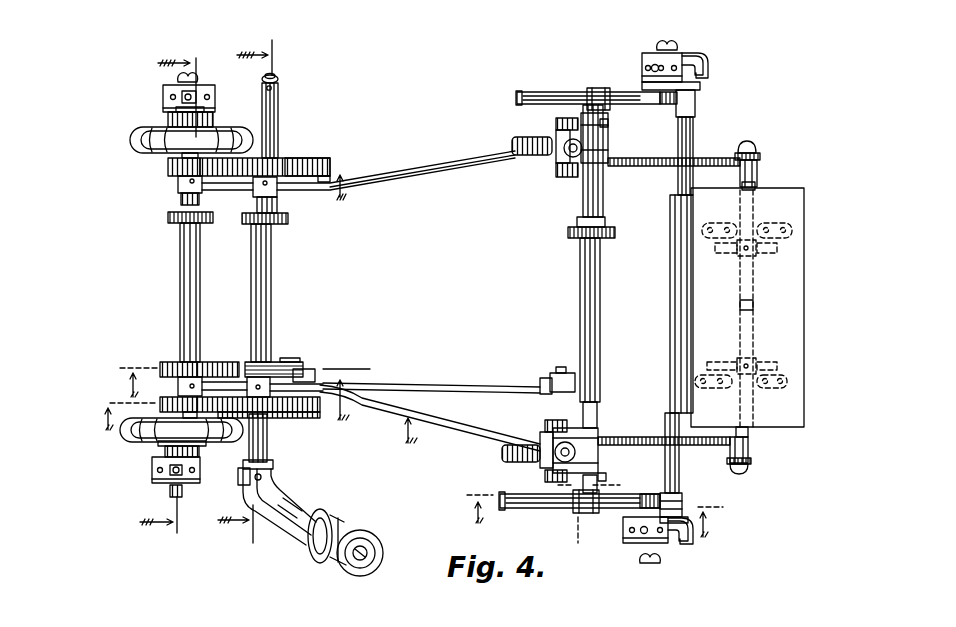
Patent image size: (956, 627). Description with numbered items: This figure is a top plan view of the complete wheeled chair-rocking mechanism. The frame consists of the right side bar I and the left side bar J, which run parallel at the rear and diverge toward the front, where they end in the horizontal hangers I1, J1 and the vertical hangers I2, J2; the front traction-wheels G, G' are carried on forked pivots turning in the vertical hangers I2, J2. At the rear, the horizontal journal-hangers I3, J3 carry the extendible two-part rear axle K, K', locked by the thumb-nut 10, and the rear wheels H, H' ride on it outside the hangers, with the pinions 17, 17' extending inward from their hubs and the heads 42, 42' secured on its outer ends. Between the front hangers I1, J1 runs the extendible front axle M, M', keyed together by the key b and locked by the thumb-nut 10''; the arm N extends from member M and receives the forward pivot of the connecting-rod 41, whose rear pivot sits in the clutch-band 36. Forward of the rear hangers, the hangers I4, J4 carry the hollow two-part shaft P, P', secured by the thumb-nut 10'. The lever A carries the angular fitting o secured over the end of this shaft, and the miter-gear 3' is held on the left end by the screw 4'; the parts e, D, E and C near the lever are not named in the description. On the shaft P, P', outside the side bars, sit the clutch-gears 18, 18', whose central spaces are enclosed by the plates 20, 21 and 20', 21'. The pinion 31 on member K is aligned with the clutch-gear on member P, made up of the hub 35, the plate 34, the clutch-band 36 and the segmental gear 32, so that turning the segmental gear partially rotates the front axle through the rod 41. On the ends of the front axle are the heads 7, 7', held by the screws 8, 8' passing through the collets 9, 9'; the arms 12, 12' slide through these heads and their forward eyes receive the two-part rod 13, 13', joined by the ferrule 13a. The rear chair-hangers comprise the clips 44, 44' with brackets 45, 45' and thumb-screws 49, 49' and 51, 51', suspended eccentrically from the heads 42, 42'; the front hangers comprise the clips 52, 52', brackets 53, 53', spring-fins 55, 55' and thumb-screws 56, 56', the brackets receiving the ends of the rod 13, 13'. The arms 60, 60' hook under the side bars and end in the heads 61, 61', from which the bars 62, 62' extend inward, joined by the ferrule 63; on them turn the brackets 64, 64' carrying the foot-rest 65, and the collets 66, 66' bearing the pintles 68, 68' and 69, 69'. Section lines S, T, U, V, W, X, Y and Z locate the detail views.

The thumb-screw 49' is at (158, 69).
The thumb-screw 51' is at (441, 305).
The inverted-U-shaped clip 44' is at (203, 83).
The head 42' is at (159, 93).
The rear left traction-wheel H' is at (179, 129).
The pinion 17' is at (148, 160).
The section line S S is at (167, 166).
The horizontal journal-hanger J3 is at (160, 188).
The shaft member K' is at (175, 203).
The thumb-nut 10 is at (165, 221).
The section line V V is at (170, 295).
The section line W W is at (248, 291).
The miter-gear 3' is at (284, 74).
The screw 4' is at (286, 92).
The hollow shaft member P' is at (277, 148).
The plate 21' is at (309, 136).
The clutch-gear 18' is at (277, 154).
The horizontal hanger J4 is at (277, 189).
The plate 20' is at (337, 203).
The thumb-nut 10' is at (281, 229).
The left side bar J is at (416, 170).
The front left traction-wheel G' is at (508, 138).
The vertical hanger J2 is at (556, 125).
The arm 12' is at (595, 83).
The collet 9' is at (566, 109).
The head 7' is at (598, 84).
The screw 8' is at (616, 118).
The horizontal hanger J1 is at (608, 138).
The bracket 53' is at (655, 77).
The inverted-U-shaped clip 52' is at (649, 58).
The thumb-screw 56' is at (650, 41).
The spring-fin 55' is at (710, 63).
The hollow rod member 13' is at (701, 142).
The head 61' is at (771, 157).
The bar 62' is at (731, 181).
The foot-rest 65 is at (787, 190).
The left arm 60' is at (674, 177).
The front axle member M' is at (610, 161).
The key b is at (577, 221).
The thumb-nut 10'' is at (570, 238).
The bracket 64' is at (749, 218).
The pintle 69 is at (715, 255).
The pintle 69' is at (781, 253).
The collet 66' is at (731, 265).
The ferrule 13a is at (680, 306).
The ferrule 63 is at (753, 306).
The collet 66 is at (730, 348).
The pintle 68 is at (712, 355).
The pintle 68' is at (778, 357).
The bracket 64 is at (741, 308).
The rear shaft member K is at (172, 292).
The pinion 31 is at (162, 362).
The segmental gear 32 is at (212, 362).
The horizontal journal-hanger I3 is at (178, 387).
The section line T T is at (238, 389).
The hub 35 is at (273, 360).
The plate 34 is at (284, 360).
The horizontal hanger I4 is at (268, 378).
The clutch-band 36 is at (313, 372).
The plate 21 is at (310, 373).
The pinion 17 is at (160, 408).
The section line U U is at (436, 413).
The clutch-gear 18 is at (262, 420).
The plate 20 is at (269, 430).
The rear right traction-wheel H is at (171, 444).
The bracket 45 is at (200, 456).
The bracket 45' is at (213, 113).
The hollow shaft member P is at (264, 438).
The angular fitting o is at (271, 473).
The screw e is at (262, 478).
The head 42 is at (156, 470).
The thumb-screw 49 is at (157, 491).
The thumb-screw 51 is at (166, 504).
The inverted-U-shaped clip 44 is at (186, 487).
The lever A is at (297, 515).
The hub D is at (345, 521).
The flange E is at (308, 546).
The cap C is at (371, 539).
The connecting-rod 41 is at (429, 385).
The arm N is at (568, 373).
The front axle member M is at (602, 333).
The right side bar I is at (437, 424).
The front right traction-wheel G is at (499, 453).
The vertical hanger I2 is at (545, 437).
The horizontal hanger I1 is at (592, 440).
The right arm 60 is at (664, 432).
The bar 62 is at (718, 433).
The head 61 is at (757, 455).
The hollow rod member 13 is at (684, 465).
The section line X X is at (593, 511).
The section line Y Y is at (568, 482).
The section line Z Z is at (576, 539).
The collet 9 is at (552, 487).
The head 7 is at (586, 507).
The screw 8 is at (604, 477).
The arm 12 is at (577, 514).
The inverted-U-shaped clip 52 is at (633, 541).
The thumb-screw 56 is at (628, 559).
The bracket 53 is at (697, 534).
The spring-fin 55 is at (692, 543).